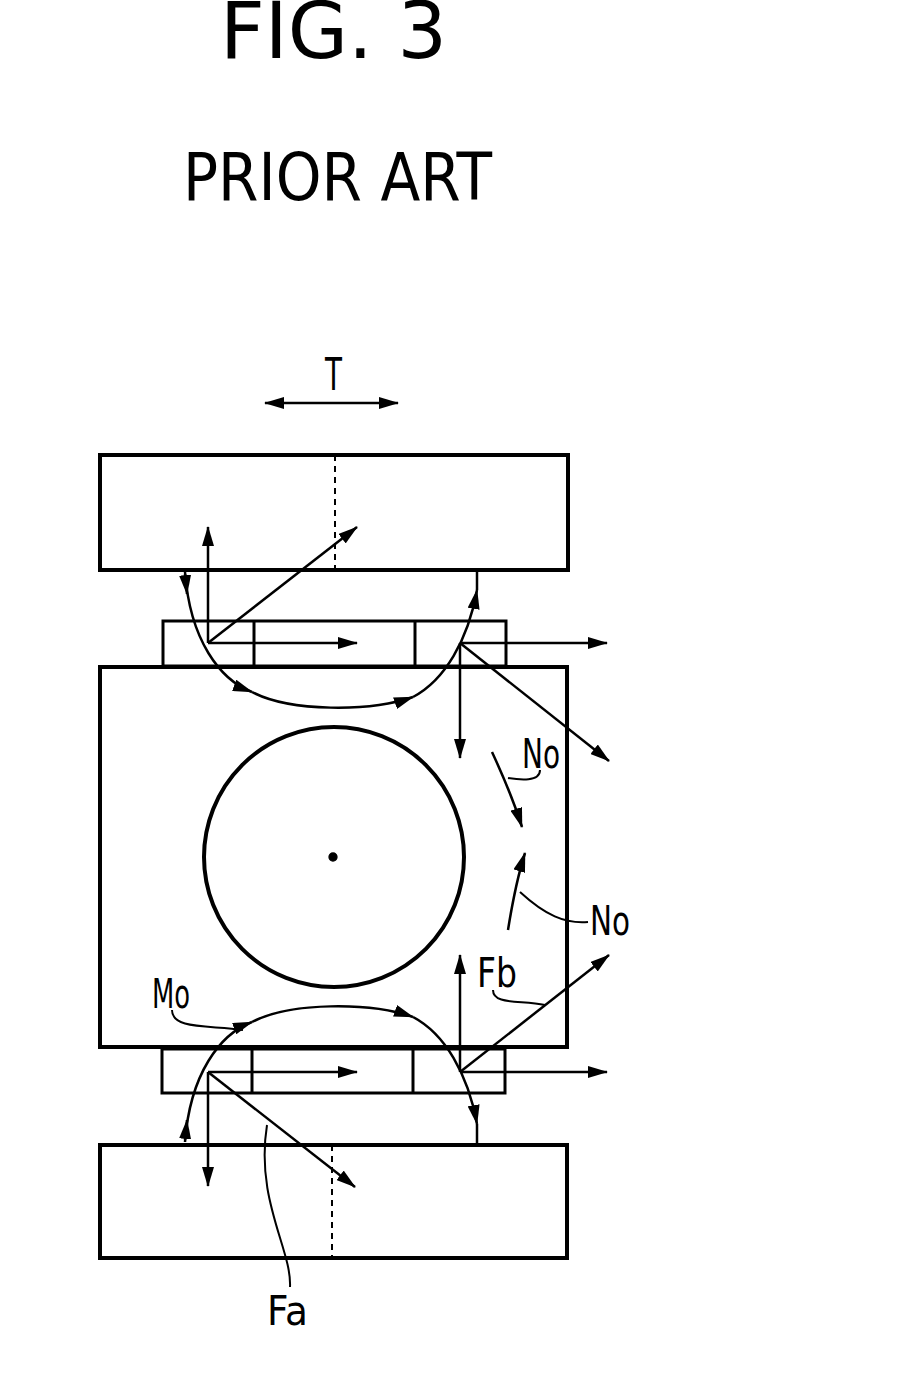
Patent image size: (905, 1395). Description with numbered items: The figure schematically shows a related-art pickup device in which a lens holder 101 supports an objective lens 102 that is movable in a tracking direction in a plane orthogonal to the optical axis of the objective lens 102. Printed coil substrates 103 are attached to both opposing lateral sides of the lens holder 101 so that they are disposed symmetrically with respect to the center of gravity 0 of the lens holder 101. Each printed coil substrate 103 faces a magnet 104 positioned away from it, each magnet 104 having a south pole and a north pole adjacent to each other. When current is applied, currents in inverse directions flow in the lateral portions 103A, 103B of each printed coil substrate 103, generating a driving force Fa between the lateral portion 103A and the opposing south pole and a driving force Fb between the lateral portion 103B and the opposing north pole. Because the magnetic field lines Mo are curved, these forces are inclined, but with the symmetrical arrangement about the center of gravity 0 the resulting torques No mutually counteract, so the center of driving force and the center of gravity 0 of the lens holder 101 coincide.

The lens holder 101 is at (560, 833).
The objective lens 102 is at (220, 893).
The center of gravity 0 is at (336, 855).
The printed coil substrate 103 is at (320, 1093).
The lateral portion 103A is at (163, 652).
The lateral portion 103B is at (510, 628).
The magnet 104 is at (481, 470).